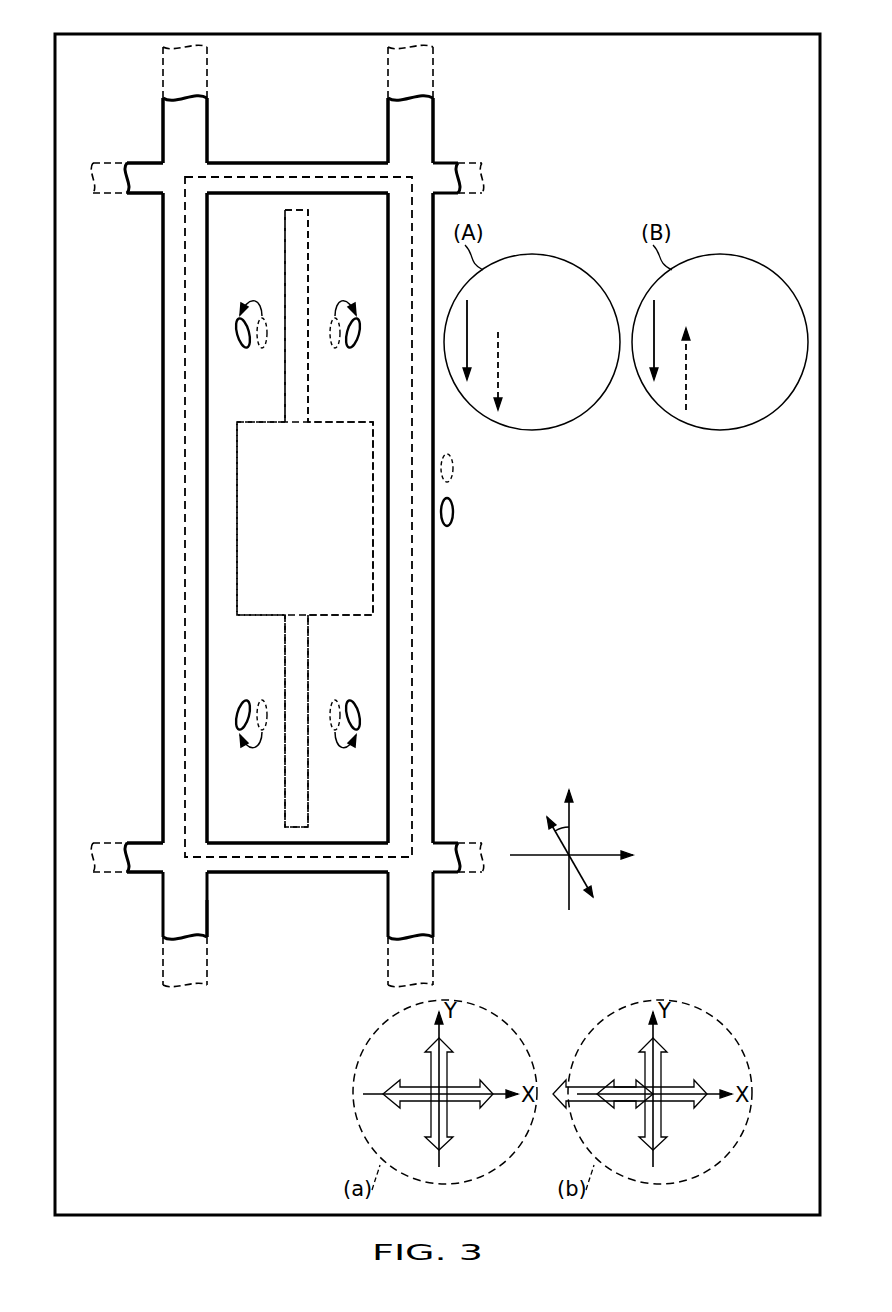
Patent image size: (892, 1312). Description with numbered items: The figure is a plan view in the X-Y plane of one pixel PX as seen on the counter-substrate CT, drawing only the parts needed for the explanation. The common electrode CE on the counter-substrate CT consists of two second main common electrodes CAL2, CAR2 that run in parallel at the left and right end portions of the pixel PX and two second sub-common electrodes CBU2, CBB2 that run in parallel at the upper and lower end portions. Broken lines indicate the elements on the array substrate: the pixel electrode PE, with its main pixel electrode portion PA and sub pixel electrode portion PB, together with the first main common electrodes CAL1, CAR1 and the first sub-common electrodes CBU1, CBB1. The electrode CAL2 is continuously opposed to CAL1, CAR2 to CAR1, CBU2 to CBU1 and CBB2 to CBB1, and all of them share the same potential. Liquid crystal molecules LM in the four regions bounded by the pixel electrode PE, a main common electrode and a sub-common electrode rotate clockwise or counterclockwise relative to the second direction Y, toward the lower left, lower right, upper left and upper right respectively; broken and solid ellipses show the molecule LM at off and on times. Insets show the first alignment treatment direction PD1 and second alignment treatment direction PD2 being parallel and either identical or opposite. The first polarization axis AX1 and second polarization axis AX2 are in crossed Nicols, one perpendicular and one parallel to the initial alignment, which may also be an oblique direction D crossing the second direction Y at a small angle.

The pixel PX is at (415, 172).
The counter-substrate CT is at (535, 103).
The common electrode CE is at (210, 923).
The first main common electrode on the left side CAL1 is at (163, 80).
The first main common electrode on the right side CAR1 is at (433, 63).
The second main common electrode on the left side CAL2 is at (163, 776).
The second main common electrode on the right side CAR2 is at (435, 633).
The first sub-common electrode on the upper side CBU1 is at (115, 197).
The second sub-common electrode on the upper side CBU2 is at (283, 163).
The first sub-common electrode on the lower side CBB1 is at (115, 874).
The second sub-common electrode on the lower side CBB2 is at (300, 873).
The pixel electrode PE is at (305, 262).
The main pixel electrode portion PA is at (285, 247).
The sub pixel electrode portion PB is at (347, 422).
The liquid crystal molecule LM is at (520, 524).
The second alignment treatment direction PD2 is at (467, 312).
The first alignment treatment direction PD1 is at (498, 345).
The oblique direction D is at (547, 817).
The first polarization axis AX1 is at (470, 1105).
The second polarization axis AX2 is at (447, 1062).